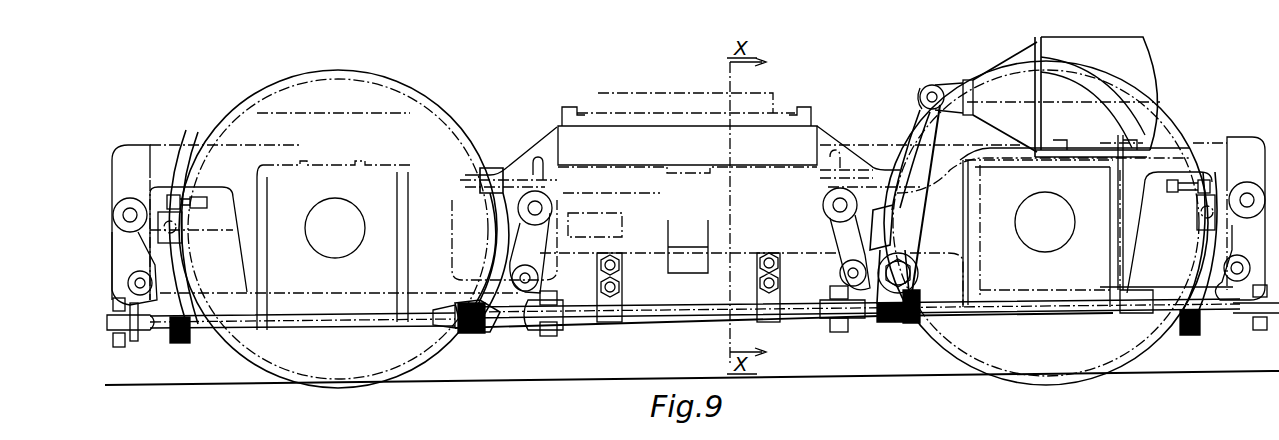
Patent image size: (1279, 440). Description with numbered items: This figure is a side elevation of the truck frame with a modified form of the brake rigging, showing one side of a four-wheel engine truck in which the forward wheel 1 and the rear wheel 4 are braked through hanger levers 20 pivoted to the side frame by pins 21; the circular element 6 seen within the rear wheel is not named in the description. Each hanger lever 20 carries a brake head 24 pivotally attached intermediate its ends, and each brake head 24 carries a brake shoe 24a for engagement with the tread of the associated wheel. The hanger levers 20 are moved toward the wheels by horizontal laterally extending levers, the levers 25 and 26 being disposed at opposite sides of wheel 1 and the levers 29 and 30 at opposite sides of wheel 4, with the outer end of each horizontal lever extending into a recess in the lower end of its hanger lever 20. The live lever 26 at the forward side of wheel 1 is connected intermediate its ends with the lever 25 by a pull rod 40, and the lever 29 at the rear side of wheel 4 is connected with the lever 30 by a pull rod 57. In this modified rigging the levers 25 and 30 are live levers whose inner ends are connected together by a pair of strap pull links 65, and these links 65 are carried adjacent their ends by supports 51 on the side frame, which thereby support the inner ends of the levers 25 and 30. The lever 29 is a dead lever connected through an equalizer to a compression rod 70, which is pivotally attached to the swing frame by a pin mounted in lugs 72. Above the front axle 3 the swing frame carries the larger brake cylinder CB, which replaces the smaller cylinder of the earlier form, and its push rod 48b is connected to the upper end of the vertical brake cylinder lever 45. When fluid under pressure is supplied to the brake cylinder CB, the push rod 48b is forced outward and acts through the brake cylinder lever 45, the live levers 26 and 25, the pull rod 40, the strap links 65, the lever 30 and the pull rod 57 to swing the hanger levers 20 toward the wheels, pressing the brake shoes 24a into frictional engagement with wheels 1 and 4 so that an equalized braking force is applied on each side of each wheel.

The wheel 1 is at (1175, 118).
The front axle 3 is at (1063, 247).
The wheel 4 is at (220, 114).
The axle journal 6 is at (328, 257).
The hanger lever 20 is at (131, 208).
The pin 21 is at (175, 196).
The brake head 24 is at (508, 247).
The brake shoe 24a is at (182, 278).
The horizontal lever 25 is at (838, 324).
The horizontal lever 26 is at (1260, 325).
The horizontal lever 29 is at (122, 338).
The horizontal lever 30 is at (547, 338).
The pull rod 40 is at (1037, 313).
The brake cylinder lever 45 is at (922, 138).
The push rod 48b is at (952, 86).
The support 51 is at (757, 280).
The pull rod 57 is at (325, 322).
The strap pull link 65 is at (670, 327).
The compression rod 70 is at (393, 312).
The lugs 72 is at (462, 290).
The brake cylinder CB is at (1140, 50).